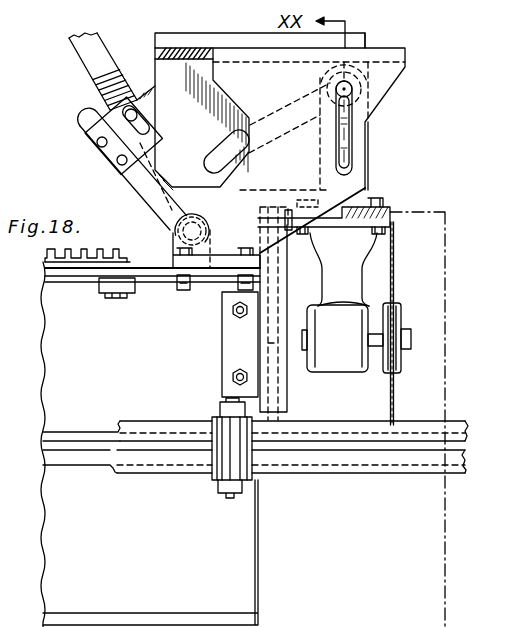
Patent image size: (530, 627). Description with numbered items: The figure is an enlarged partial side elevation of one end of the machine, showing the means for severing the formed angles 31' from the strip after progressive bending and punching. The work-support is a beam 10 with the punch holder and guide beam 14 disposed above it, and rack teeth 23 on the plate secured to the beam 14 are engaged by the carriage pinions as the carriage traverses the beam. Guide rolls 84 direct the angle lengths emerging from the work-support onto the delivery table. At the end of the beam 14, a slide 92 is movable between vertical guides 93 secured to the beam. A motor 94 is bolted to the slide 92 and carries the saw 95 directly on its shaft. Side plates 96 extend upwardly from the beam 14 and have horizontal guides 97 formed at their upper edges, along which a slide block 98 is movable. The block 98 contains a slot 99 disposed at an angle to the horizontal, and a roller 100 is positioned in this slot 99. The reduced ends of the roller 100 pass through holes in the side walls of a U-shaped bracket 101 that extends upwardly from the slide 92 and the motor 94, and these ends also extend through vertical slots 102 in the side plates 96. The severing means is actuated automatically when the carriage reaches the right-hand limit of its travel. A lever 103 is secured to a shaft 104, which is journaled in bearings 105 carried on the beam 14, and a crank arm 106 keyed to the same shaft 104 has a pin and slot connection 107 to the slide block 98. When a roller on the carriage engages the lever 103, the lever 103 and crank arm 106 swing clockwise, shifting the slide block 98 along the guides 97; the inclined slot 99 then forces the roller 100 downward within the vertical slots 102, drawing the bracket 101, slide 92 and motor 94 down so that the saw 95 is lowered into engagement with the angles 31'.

The beam 10 is at (102, 565).
The beam 14 is at (94, 444).
The rack teeth 23 is at (84, 266).
The angles 31' is at (303, 454).
The guide rolls 84 is at (225, 462).
The slide 92 is at (270, 318).
The vertical guides 93 is at (283, 390).
The motor 94 is at (356, 303).
The saw 95 is at (395, 272).
The side plates 96 is at (217, 244).
The horizontal guides 97 is at (390, 60).
The slide block 98 is at (260, 111).
The slot 99 is at (213, 150).
The roller 100 is at (353, 91).
The U-shaped bracket 101 is at (322, 161).
The vertical slots 102 is at (352, 138).
The lever 103 is at (88, 55).
The shaft 104 is at (232, 188).
The bearings 105 is at (207, 233).
The crank arm 106 is at (135, 182).
The pin and slot connection 107 is at (132, 115).